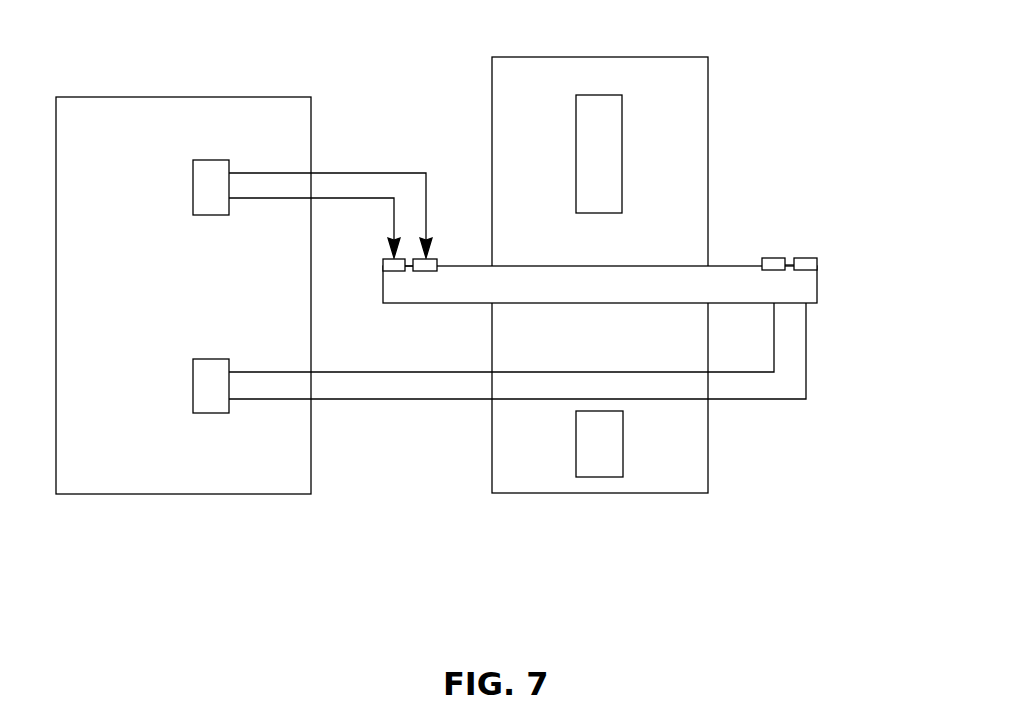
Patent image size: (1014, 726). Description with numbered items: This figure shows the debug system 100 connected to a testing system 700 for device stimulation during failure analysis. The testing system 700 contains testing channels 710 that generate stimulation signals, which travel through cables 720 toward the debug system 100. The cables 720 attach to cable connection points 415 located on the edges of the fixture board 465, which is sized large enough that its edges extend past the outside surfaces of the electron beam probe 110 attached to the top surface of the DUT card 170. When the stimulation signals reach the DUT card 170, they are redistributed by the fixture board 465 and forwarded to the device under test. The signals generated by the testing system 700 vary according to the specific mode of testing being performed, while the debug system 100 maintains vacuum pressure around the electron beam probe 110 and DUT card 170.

The debug system 100 is at (647, 311).
The electron beam probe 110 is at (708, 83).
The DUT card 170 is at (639, 214).
The cable connection points 415 is at (773, 257).
The fixture board 465 is at (736, 264).
The testing system 700 is at (182, 494).
The testing channels 710 is at (193, 183).
The cables 720 is at (373, 372).